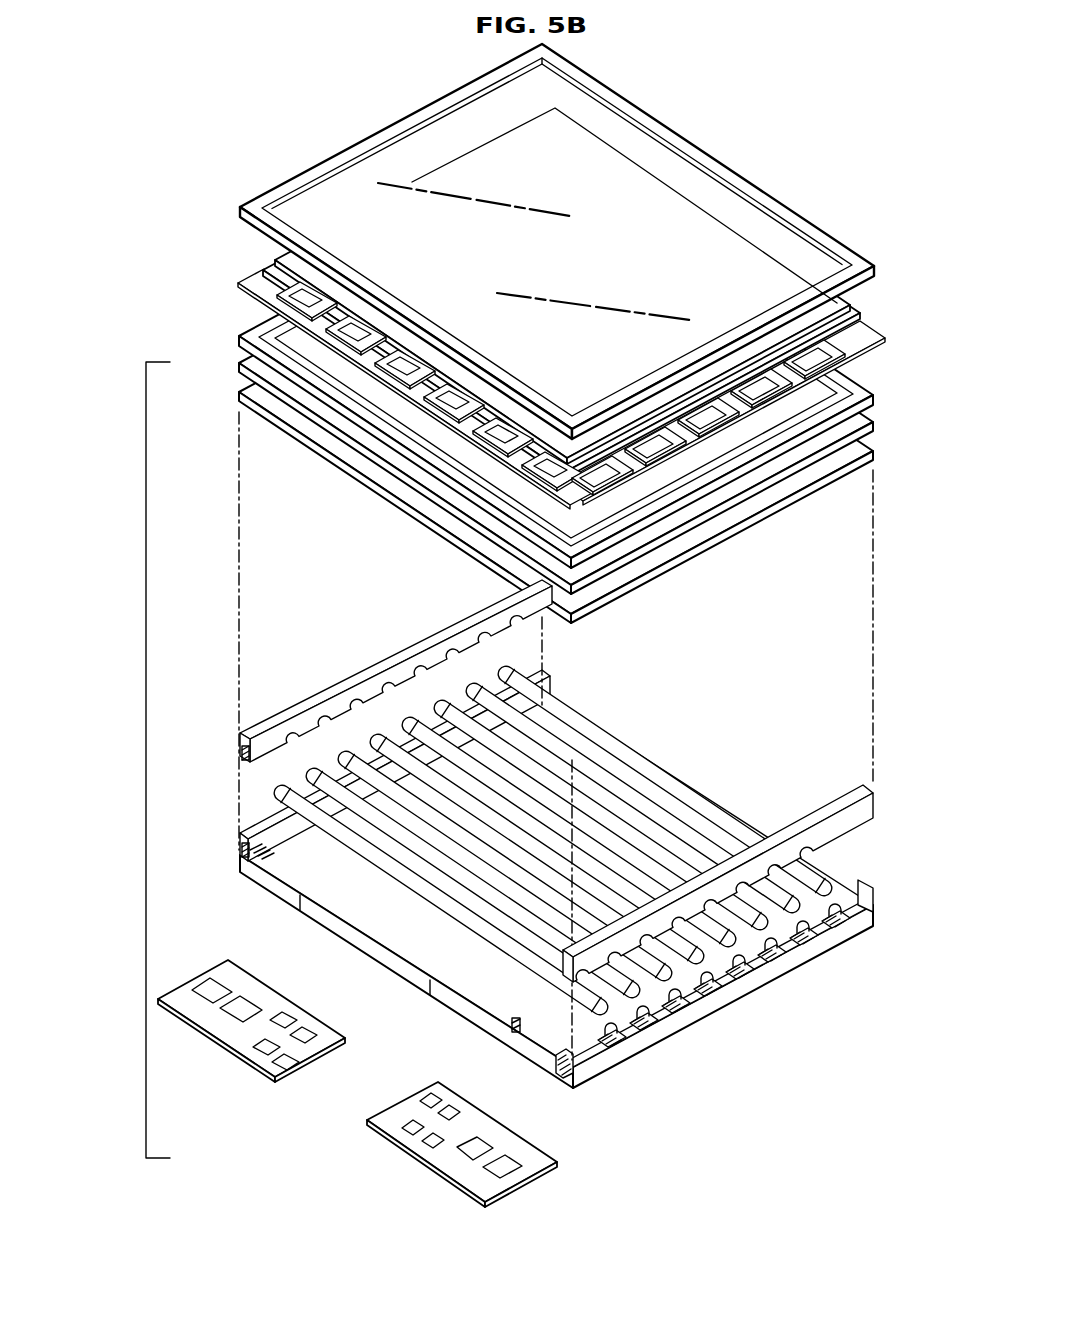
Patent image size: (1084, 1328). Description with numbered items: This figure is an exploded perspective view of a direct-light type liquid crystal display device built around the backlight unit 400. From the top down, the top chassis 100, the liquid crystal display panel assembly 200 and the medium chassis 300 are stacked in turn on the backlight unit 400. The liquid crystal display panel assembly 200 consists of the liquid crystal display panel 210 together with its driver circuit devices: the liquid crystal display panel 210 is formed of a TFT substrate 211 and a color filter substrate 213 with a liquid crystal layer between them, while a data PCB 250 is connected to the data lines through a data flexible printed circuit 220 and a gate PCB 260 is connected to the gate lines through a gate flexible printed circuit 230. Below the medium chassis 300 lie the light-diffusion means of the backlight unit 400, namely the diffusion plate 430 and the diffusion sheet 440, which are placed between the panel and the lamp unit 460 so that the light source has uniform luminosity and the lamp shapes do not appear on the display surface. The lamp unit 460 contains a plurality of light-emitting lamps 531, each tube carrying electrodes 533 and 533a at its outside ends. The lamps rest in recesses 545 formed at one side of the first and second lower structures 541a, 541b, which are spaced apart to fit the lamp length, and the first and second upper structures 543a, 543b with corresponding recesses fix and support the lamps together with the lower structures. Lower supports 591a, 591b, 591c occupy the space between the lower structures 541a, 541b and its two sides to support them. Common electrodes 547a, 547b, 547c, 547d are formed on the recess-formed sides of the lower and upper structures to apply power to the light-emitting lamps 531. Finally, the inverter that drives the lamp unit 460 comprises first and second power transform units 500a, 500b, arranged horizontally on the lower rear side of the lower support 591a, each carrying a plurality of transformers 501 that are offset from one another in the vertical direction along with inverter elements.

The top chassis 100 is at (657, 122).
The liquid crystal display panel assembly 200 is at (260, 260).
The liquid crystal display panel 210 is at (894, 178).
The TFT substrate 211 is at (870, 305).
The color filter substrate 213 is at (843, 297).
The data flexible printed circuit 220 is at (427, 403).
The gate flexible printed circuit 230 is at (740, 425).
The data PCB 250 is at (530, 467).
The gate PCB 260 is at (852, 347).
The medium chassis 300 is at (238, 336).
The backlight unit 400 is at (510, 703).
The diffusion plate 430 is at (665, 556).
The diffusion sheet 440 is at (712, 508).
The lamp unit 460 is at (724, 753).
The first power transform unit 500a is at (240, 1035).
The second power transform unit 500b is at (388, 1125).
The transformers 501 is at (240, 1003).
The light-emitting lamps 531 is at (635, 757).
The electrode 533 is at (845, 868).
The electrode 533a is at (538, 672).
The first lower structure 541a is at (730, 1003).
The second lower structure 541b is at (245, 836).
The first upper structure 543a is at (808, 818).
The second upper structure 543b is at (400, 655).
The recesses 545 is at (540, 628).
The common electrode 547a is at (560, 1068).
The common electrode 547b is at (240, 857).
The common electrode 547c is at (517, 1023).
The common electrode 547d is at (243, 755).
The lower support 591a is at (453, 953).
The lower support 591b is at (853, 893).
The lower support 591c is at (372, 950).